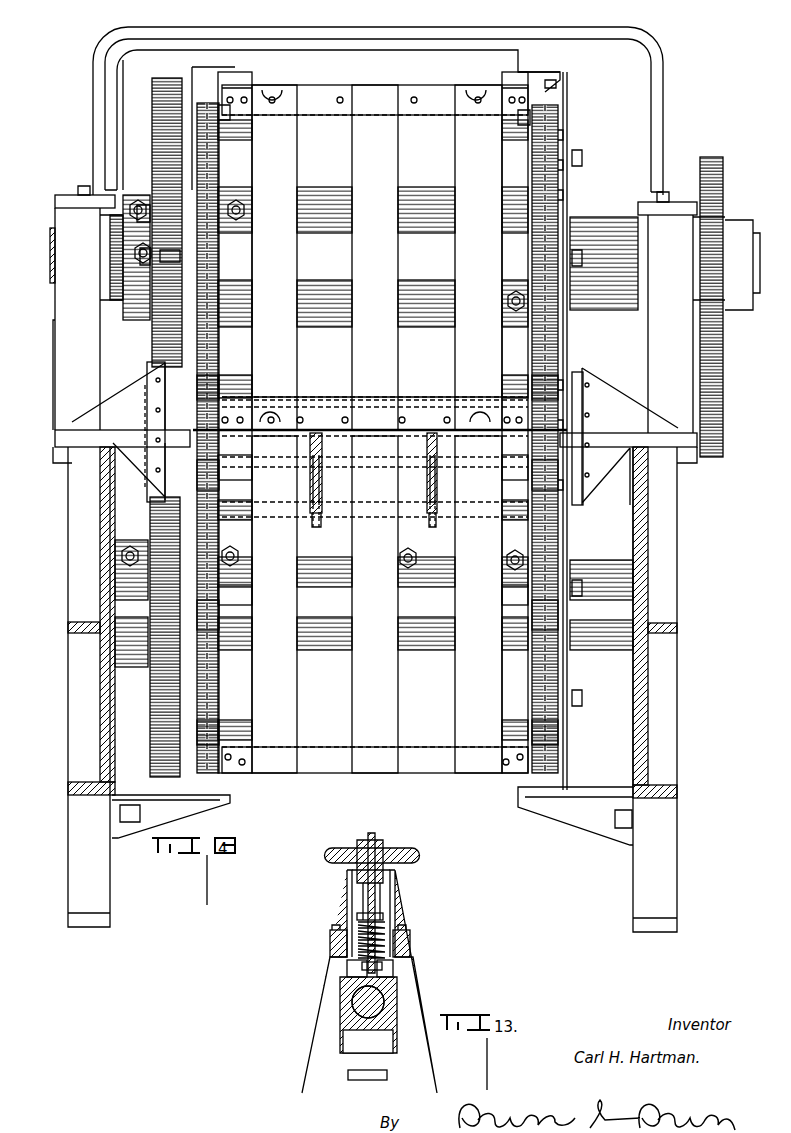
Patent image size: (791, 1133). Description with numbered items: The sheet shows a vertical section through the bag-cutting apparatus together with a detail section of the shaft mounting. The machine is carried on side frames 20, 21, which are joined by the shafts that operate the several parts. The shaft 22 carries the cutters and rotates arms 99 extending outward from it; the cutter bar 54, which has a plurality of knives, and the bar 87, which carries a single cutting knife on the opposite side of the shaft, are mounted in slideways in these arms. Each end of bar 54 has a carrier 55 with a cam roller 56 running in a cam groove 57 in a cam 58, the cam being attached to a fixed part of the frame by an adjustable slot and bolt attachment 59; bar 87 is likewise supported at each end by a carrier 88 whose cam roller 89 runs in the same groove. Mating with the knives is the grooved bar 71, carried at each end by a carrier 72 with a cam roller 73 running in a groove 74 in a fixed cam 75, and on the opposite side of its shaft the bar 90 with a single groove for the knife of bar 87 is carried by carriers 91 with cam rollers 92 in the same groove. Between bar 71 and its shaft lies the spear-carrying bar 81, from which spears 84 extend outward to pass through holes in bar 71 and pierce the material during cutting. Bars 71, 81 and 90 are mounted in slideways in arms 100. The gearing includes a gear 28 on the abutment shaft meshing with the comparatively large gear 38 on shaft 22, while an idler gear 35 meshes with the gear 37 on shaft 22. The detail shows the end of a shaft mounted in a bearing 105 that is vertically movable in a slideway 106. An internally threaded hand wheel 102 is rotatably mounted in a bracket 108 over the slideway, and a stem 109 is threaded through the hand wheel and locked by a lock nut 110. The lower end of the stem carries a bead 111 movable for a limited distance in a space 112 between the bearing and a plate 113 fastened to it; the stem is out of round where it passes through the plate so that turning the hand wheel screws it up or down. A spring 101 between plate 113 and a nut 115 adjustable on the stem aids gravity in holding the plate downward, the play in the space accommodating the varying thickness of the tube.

In FIG. 4, the side frame 20 is at (105, 885).
In FIG. 4, the side frame 21 is at (672, 883).
In FIG. 4, the shaft 22 is at (53, 248).
In FIG. 4, the gear 28 is at (155, 700).
In FIG. 4, the idler gear 35 is at (720, 443).
In FIG. 4, the gear 37 is at (722, 335).
In FIG. 4, the gear 38 is at (160, 95).
In FIG. 4, the bar 54 is at (320, 410).
In FIG. 4, the carrier 55 is at (240, 398).
In FIG. 4, the cam roller 56 is at (210, 388).
In FIG. 4, the cam groove 57 is at (548, 148).
In FIG. 4, the cam 58 is at (540, 256).
In FIG. 4, the slot and bolt attachment 59 is at (582, 160).
In FIG. 4, the grooved bar 71 is at (337, 450).
In FIG. 4, the carrier 72 is at (238, 463).
In FIG. 4, the cam roller 73 is at (212, 478).
In FIG. 4, the groove 74 is at (205, 618).
In FIG. 4, the fixed cam 75 is at (205, 592).
In FIG. 4, the spear-carrying bar 81 is at (332, 517).
In FIG. 4, the spear 84 is at (321, 480).
In FIG. 4, the bar 87 is at (323, 108).
In FIG. 4, the carrier 88 is at (245, 97).
In FIG. 4, the cam roller 89 is at (220, 132).
In FIG. 4, the bar 90 is at (320, 757).
In FIG. 4, the carrier 91 is at (243, 740).
In FIG. 4, the cam roller 92 is at (213, 730).
In FIG. 4, the arm 99 is at (290, 174).
In FIG. 4, the arm 100 is at (290, 688).
In FIG. 13, the spring 101 is at (386, 930).
In FIG. 13, the hand wheel 102 is at (418, 857).
In FIG. 13, the bearing 105 is at (400, 1000).
In FIG. 13, the slideway 106 is at (394, 973).
In FIG. 13, the bracket 108 is at (397, 897).
In FIG. 13, the stem 109 is at (362, 896).
In FIG. 13, the lock nut 110 is at (366, 845).
In FIG. 13, the bead 111 is at (346, 969).
In FIG. 13, the space 112 is at (352, 985).
In FIG. 13, the plate 113 is at (384, 964).
In FIG. 13, the nut 115 is at (356, 918).